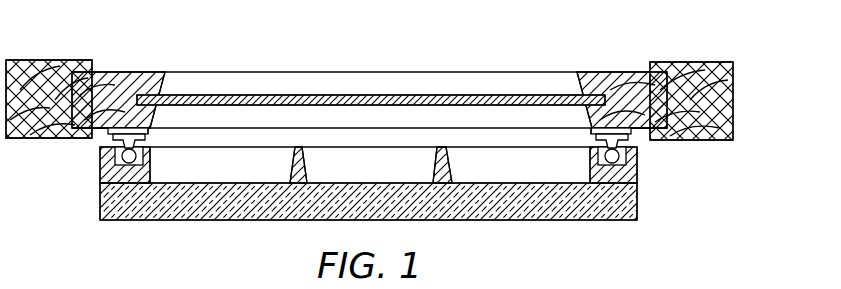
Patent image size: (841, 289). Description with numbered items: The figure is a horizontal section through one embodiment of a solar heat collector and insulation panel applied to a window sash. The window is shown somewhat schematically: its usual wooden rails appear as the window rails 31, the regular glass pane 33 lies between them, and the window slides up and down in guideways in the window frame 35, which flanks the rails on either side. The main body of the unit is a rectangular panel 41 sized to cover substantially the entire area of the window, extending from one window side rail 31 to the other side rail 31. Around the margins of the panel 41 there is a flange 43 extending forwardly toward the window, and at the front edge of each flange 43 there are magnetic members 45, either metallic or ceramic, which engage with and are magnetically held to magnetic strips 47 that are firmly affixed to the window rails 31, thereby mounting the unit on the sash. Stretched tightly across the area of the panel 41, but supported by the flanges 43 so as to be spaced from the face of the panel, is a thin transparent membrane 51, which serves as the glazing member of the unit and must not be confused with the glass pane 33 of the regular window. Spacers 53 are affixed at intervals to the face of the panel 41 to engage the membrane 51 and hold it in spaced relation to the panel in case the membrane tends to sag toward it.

The window rail 31 is at (128, 72).
The glass pane 33 is at (383, 95).
The window frame 35 is at (58, 60).
The rectangular panel 41 is at (554, 220).
The flange 43 is at (102, 162).
The magnetic member 45 is at (108, 136).
The magnetic strip 47 is at (148, 131).
The transparent membrane 51 is at (473, 147).
The spacer 53 is at (433, 165).